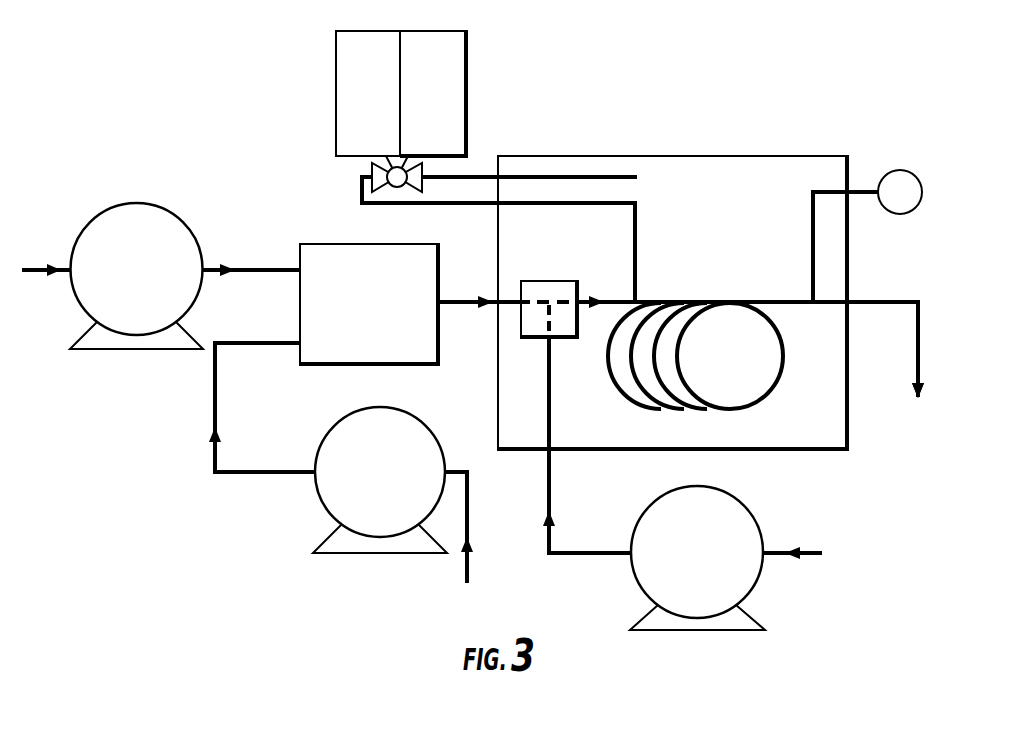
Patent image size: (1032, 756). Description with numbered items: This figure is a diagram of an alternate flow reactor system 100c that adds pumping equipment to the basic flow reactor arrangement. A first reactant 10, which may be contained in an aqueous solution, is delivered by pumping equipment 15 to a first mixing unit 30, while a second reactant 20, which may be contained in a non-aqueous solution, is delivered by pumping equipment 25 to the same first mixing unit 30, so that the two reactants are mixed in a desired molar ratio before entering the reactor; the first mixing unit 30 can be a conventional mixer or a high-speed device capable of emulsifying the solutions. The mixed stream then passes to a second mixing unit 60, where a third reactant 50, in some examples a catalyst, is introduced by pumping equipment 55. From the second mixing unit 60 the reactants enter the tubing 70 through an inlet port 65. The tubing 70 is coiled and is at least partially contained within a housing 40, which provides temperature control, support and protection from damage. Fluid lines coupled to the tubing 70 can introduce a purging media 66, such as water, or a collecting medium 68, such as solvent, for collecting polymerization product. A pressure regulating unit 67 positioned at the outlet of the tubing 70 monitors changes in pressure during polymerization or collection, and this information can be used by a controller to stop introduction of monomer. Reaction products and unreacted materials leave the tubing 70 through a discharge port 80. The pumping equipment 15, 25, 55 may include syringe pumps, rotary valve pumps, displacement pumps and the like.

The flow reactor system 100c is at (473, 330).
The first reactant 10 is at (247, 270).
The pumping equipment 15 is at (148, 282).
The second reactant 20 is at (246, 474).
The pumping equipment 25 is at (392, 487).
The first mixing unit 30 is at (382, 316).
The housing 40 is at (732, 250).
The third reactant 50 is at (554, 517).
The pumping equipment 55 is at (708, 562).
The second mixing unit 60 is at (552, 280).
The inlet port 65 is at (583, 298).
The purging media 66 is at (377, 99).
The pressure regulating unit 67 is at (898, 170).
The collecting medium 68 is at (442, 99).
The tubing 70 is at (785, 356).
The discharge port 80 is at (916, 340).